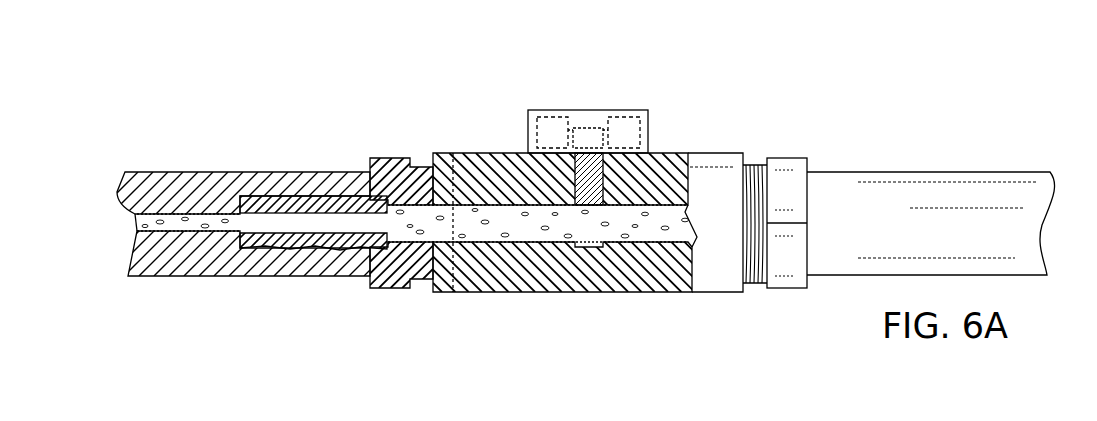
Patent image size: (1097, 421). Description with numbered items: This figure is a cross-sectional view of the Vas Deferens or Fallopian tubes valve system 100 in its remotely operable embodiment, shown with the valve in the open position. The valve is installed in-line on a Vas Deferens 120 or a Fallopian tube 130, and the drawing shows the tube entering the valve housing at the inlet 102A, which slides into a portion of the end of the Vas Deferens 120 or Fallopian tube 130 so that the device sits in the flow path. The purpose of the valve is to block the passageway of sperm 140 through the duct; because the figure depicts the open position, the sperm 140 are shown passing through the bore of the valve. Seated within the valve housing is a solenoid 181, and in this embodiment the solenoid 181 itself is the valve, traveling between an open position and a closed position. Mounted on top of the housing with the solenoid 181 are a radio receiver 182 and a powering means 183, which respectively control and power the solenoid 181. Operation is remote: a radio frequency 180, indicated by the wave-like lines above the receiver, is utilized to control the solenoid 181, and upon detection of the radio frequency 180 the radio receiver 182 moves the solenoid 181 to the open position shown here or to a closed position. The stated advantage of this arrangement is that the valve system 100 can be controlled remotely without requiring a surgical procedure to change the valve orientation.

The Vas Deferens or Fallopian tubes valve system 100 is at (732, 113).
The inlet 102A is at (240, 229).
The Vas Deferens 120 is at (243, 180).
The Fallopian tube 130 is at (280, 172).
The sperm 140 is at (518, 208).
The radio frequency 180 is at (579, 82).
The solenoid 181 is at (594, 110).
The radio receiver 182 is at (550, 110).
The powering means 183 is at (648, 137).